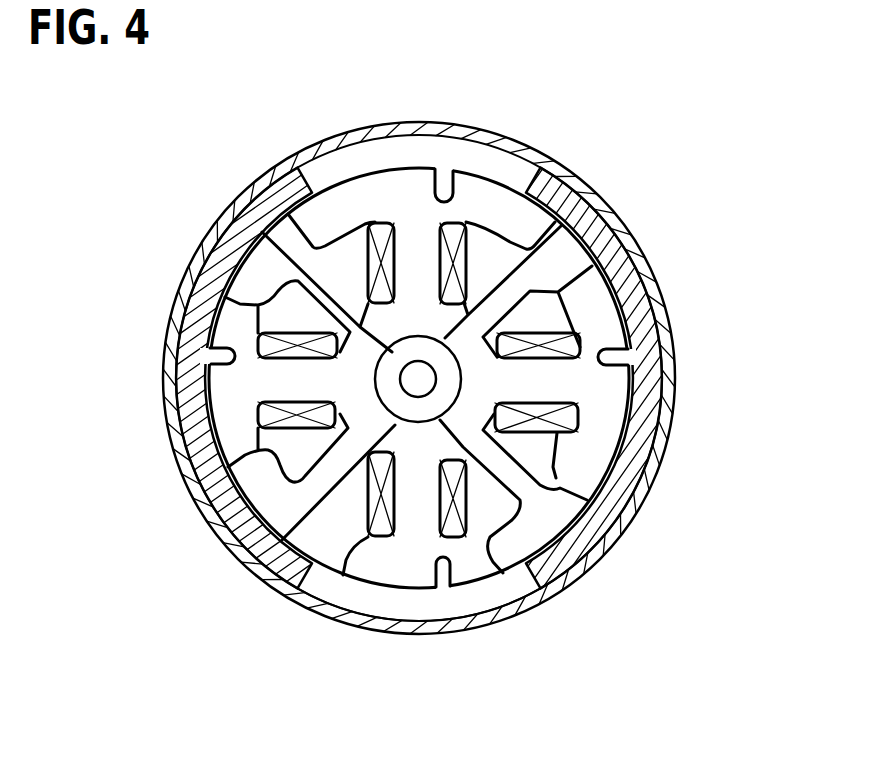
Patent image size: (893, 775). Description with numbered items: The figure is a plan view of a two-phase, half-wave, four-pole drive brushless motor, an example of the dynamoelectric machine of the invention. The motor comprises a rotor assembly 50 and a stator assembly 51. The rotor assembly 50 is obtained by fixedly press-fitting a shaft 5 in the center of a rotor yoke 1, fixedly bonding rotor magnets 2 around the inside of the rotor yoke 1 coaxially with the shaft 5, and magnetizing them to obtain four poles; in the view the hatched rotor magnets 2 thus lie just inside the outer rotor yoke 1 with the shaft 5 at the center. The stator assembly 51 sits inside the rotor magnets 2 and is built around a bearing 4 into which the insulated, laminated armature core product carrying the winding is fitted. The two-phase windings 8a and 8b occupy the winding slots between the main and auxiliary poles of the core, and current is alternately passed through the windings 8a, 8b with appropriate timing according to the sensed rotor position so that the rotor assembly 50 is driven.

The rotor yoke 1 is at (588, 187).
The rotor magnets 2 is at (650, 317).
The bearing 4 is at (397, 355).
The shaft 5 is at (397, 392).
The two-phase winding 8a is at (471, 245).
The two-phase winding 8b is at (303, 333).
The rotor assembly 50 is at (147, 440).
The stator assembly 51 is at (479, 588).